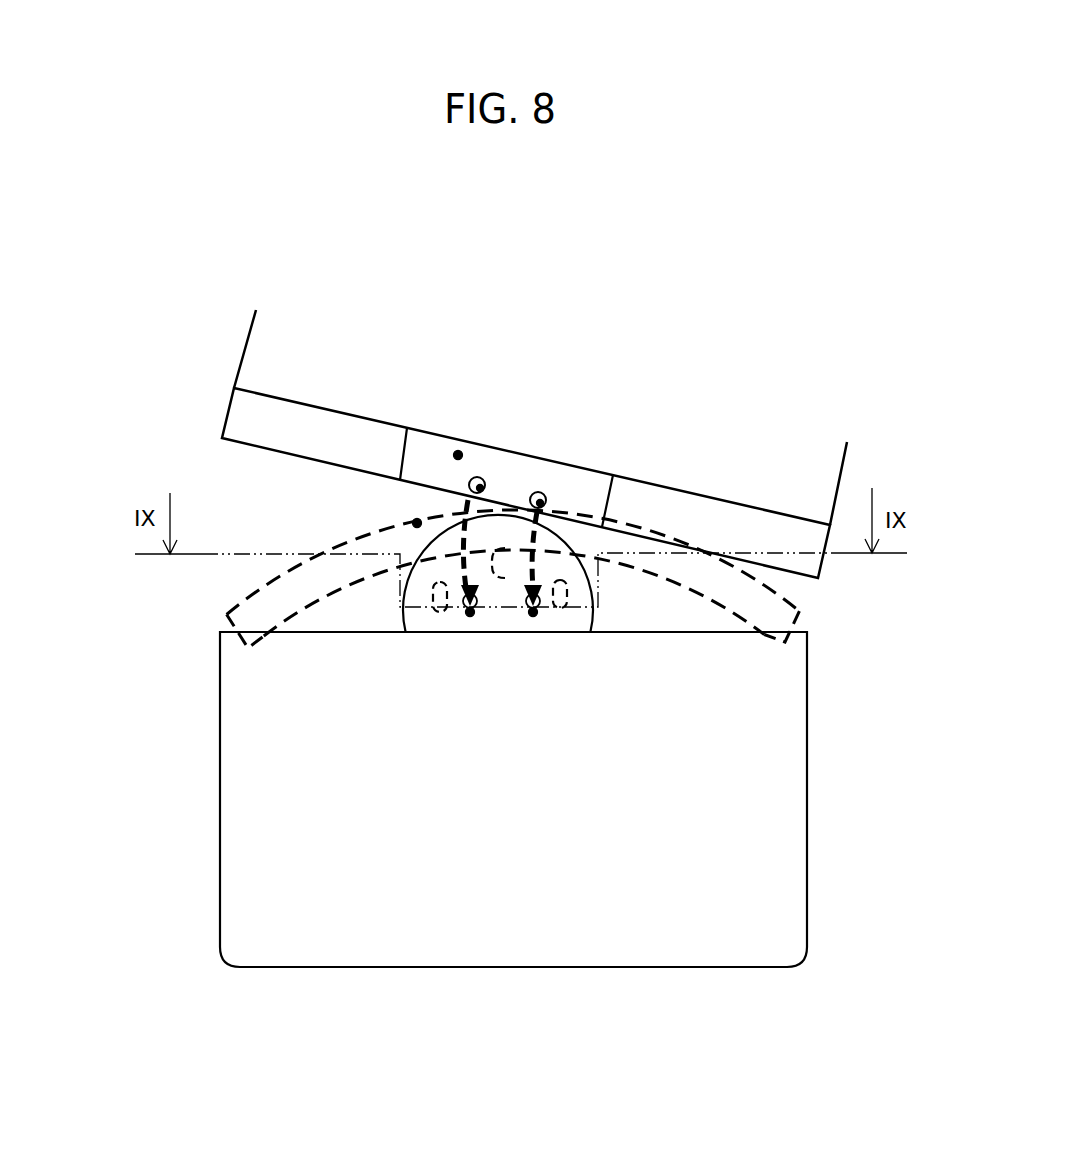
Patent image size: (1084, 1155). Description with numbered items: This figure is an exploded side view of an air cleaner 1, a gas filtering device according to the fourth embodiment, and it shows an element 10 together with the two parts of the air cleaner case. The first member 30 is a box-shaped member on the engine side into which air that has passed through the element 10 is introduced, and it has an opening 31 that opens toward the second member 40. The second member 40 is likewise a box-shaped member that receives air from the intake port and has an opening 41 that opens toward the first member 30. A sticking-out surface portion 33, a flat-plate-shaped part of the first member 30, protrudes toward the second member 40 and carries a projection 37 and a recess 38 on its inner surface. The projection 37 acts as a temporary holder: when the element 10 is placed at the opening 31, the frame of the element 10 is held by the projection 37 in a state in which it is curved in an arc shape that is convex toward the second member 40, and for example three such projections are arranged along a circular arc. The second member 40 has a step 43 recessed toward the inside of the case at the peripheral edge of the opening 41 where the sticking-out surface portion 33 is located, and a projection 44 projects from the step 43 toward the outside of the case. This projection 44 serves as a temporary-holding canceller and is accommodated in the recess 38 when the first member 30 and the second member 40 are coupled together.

The air cleaner 1 is at (234, 252).
The element 10 is at (417, 520).
The first member 30 is at (222, 802).
The opening 31 is at (366, 581).
The sticking-out surface portion 33 is at (410, 607).
The projection 37 is at (508, 563).
The recess 38 is at (470, 616).
The second member 40 is at (247, 349).
The opening 41 is at (244, 462).
The step 43 is at (480, 480).
The projection 44 is at (539, 490).